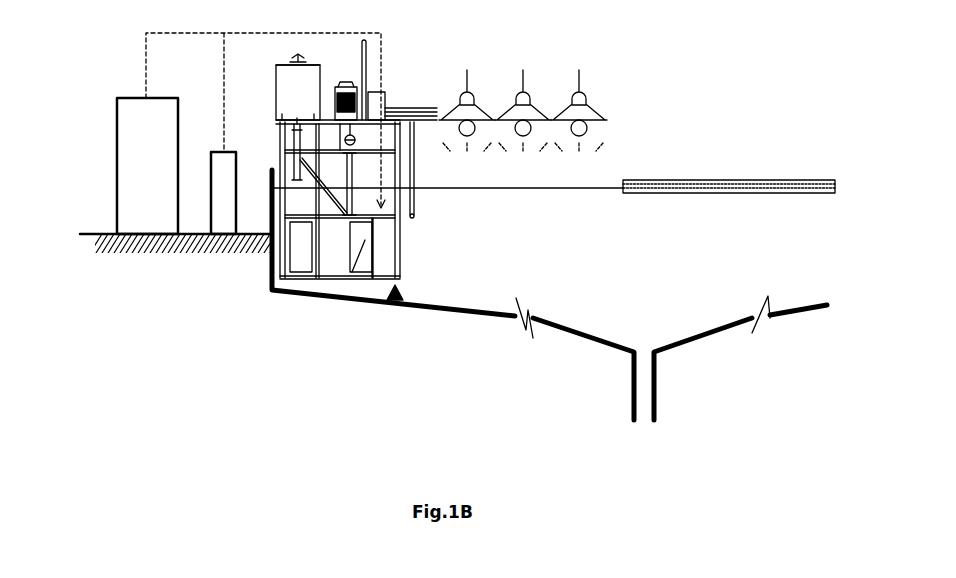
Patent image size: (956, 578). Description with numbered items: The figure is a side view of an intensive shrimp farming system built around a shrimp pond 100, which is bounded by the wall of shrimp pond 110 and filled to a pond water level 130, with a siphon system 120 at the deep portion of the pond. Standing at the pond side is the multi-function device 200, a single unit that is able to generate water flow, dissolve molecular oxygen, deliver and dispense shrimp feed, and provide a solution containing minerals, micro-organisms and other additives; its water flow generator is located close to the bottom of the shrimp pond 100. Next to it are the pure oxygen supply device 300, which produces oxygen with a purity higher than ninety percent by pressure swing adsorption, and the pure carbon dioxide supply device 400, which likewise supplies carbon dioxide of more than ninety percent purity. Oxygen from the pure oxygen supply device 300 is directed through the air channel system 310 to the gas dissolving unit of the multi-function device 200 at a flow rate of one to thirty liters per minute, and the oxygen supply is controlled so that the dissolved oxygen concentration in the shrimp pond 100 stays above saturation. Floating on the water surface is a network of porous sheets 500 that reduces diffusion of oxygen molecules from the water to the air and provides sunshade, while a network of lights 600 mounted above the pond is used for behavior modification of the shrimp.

The shrimp pond 100 is at (250, 312).
The wall of shrimp pond 110 is at (130, 255).
The siphon system 120 is at (634, 390).
The pond water level 130 is at (530, 190).
The multi-function device 200 is at (383, 90).
The pure oxygen supply device 300 is at (117, 162).
The air channel system 310 is at (272, 33).
The pure carbon dioxide supply device 400 is at (224, 150).
The porous sheets 500 is at (655, 180).
The lights 600 is at (525, 95).